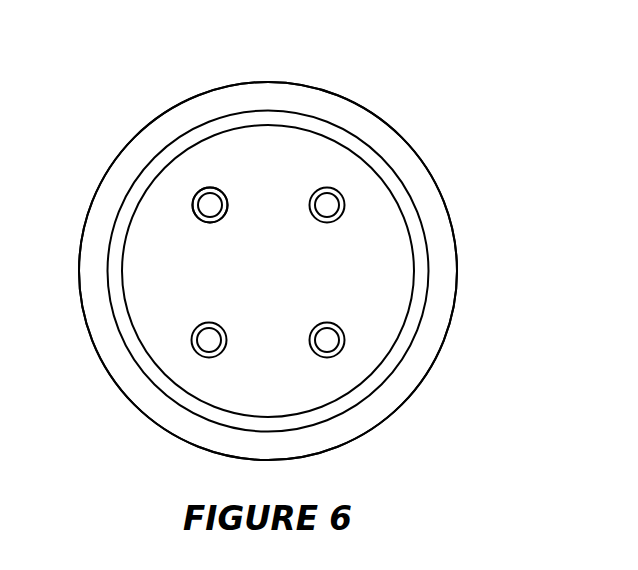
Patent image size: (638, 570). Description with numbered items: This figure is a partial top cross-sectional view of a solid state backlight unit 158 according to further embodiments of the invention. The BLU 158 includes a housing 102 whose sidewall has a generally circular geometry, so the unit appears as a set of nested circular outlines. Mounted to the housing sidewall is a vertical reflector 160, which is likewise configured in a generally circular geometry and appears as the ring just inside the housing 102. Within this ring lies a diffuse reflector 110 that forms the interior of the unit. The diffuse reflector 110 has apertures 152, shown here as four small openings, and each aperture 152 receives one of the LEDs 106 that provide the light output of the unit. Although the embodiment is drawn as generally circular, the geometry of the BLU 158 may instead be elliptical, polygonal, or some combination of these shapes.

The housing 102 is at (215, 90).
The backlight unit 158 is at (397, 92).
The vertical reflector 160 is at (383, 173).
The diffuse reflector 110 is at (383, 250).
The LEDs 106 is at (210, 205).
The apertures 152 is at (197, 192).